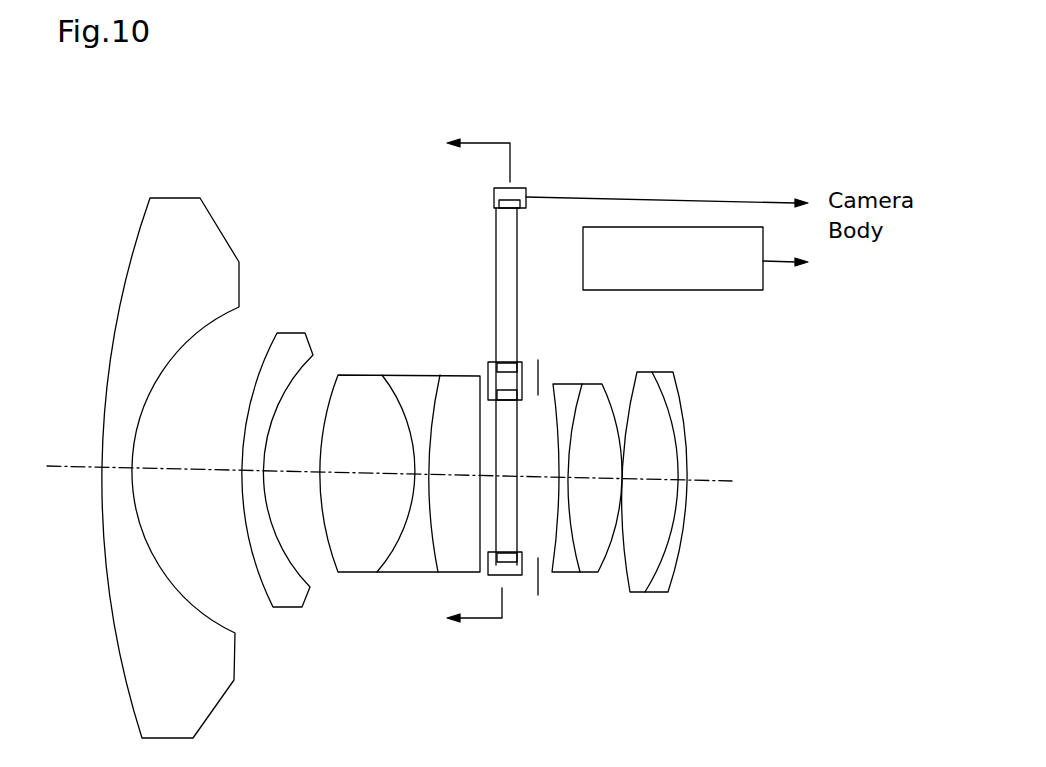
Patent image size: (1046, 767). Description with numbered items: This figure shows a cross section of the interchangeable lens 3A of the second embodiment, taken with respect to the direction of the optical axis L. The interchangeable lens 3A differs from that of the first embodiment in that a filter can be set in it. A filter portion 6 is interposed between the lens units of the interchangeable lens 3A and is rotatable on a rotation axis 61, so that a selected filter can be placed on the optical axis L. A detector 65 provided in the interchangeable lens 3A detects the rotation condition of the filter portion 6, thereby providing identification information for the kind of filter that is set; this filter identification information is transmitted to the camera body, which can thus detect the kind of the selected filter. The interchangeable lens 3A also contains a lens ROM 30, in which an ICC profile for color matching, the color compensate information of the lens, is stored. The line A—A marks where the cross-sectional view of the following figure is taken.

The interchangeable lens 3A is at (194, 183).
The filter portion 6 is at (494, 381).
The rotation axis 61 is at (482, 354).
The detector 65 is at (534, 214).
The lens ROM 30 is at (708, 290).
The optical axis L is at (80, 470).
The line A— A is at (460, 381).